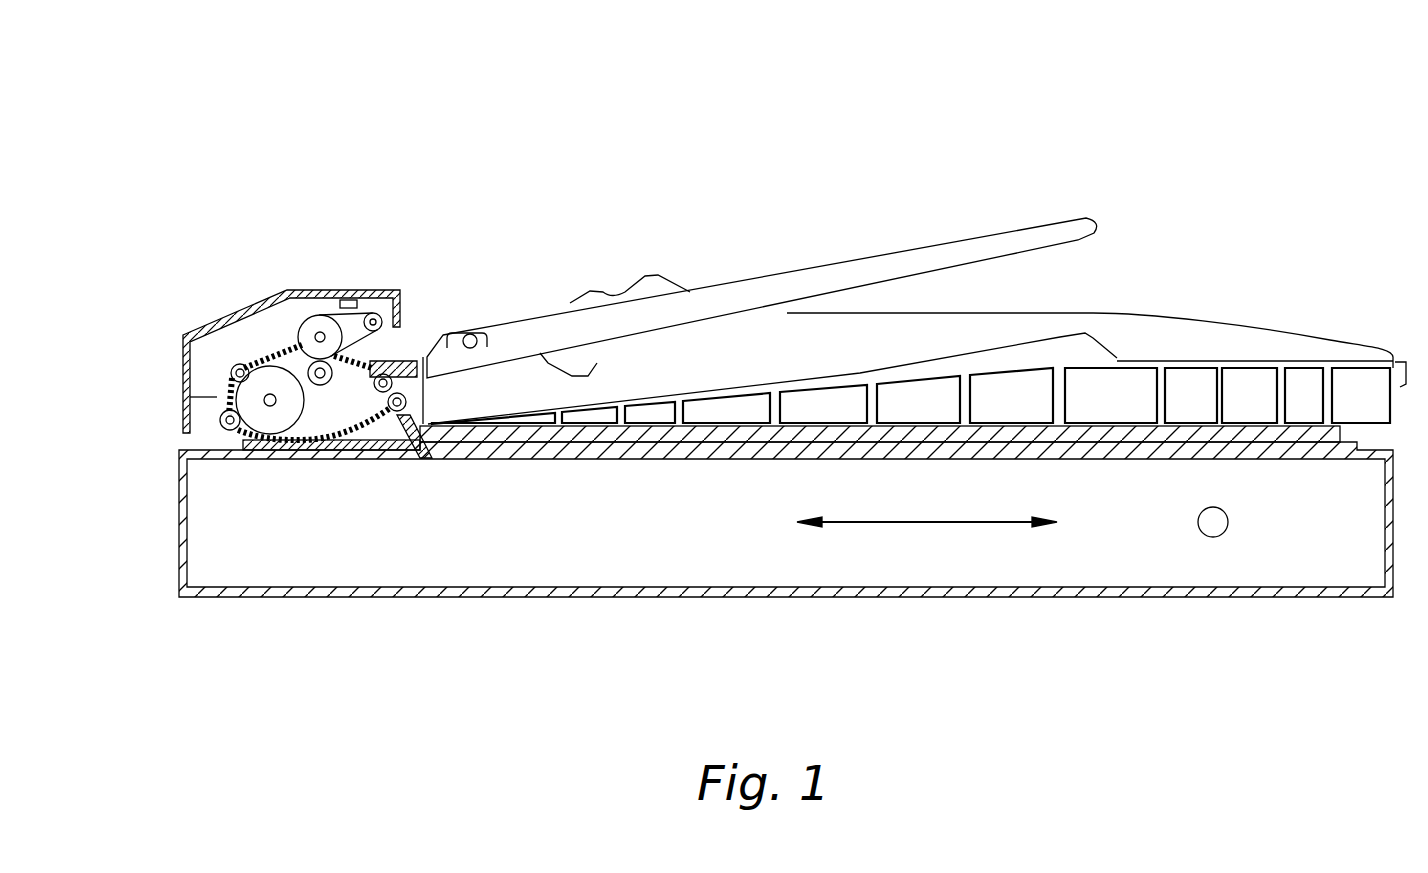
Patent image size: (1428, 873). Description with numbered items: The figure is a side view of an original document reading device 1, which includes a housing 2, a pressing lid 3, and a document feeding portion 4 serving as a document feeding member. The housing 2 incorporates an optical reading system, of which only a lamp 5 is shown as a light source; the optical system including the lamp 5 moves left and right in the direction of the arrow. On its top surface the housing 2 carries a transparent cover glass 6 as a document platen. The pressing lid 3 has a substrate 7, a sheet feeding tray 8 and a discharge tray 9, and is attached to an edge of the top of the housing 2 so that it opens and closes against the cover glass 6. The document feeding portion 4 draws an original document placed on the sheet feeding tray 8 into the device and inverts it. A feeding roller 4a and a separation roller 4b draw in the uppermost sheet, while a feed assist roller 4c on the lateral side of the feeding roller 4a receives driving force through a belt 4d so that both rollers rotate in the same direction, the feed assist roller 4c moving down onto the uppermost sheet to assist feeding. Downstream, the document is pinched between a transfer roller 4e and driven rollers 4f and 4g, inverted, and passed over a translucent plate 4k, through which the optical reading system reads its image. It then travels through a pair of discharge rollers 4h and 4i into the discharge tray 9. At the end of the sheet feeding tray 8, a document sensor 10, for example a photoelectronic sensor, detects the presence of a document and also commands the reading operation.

The original document reading device 1 is at (1060, 100).
The housing 2 is at (614, 563).
The pressing lid 3 is at (1210, 333).
The document feeding portion 4 is at (227, 303).
The feeding roller 4a is at (320, 323).
The separation roller 4b is at (280, 353).
The feed assist roller 4c is at (373, 313).
The belt 4d is at (352, 313).
The transfer roller 4e is at (223, 387).
The driven roller 4f is at (243, 368).
The driven roller 4g is at (220, 422).
The discharge roller 4h is at (410, 367).
The discharge roller 4i is at (393, 410).
The translucent plate 4k is at (287, 457).
The lamp 5 is at (1213, 527).
The transparent cover glass 6 is at (1138, 450).
The substrate 7 is at (1147, 432).
The sheet feeding tray 8 is at (720, 308).
The discharge tray 9 is at (810, 373).
The document sensor 10 is at (472, 333).